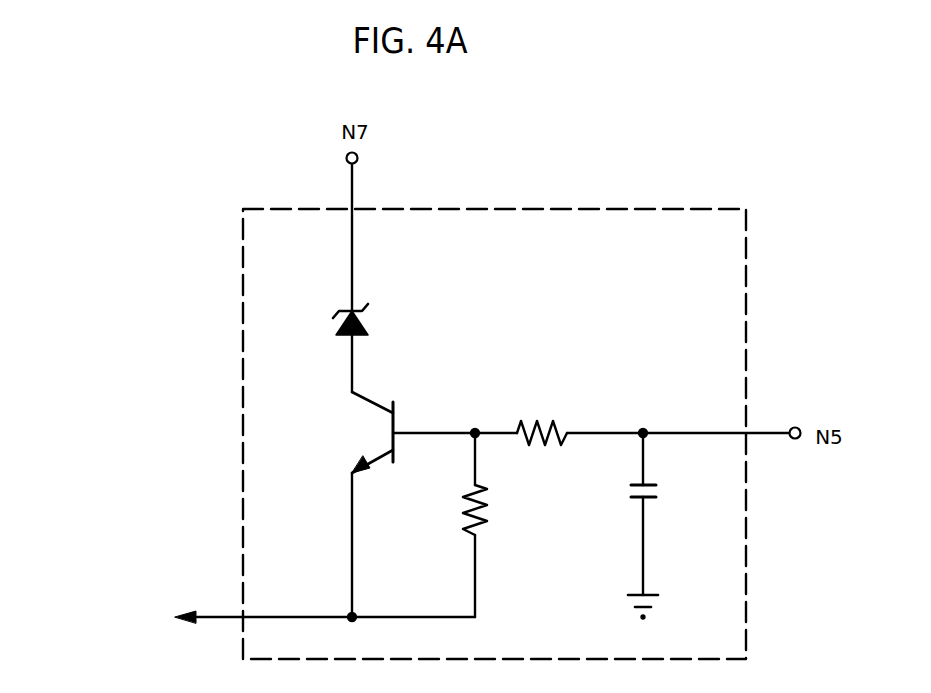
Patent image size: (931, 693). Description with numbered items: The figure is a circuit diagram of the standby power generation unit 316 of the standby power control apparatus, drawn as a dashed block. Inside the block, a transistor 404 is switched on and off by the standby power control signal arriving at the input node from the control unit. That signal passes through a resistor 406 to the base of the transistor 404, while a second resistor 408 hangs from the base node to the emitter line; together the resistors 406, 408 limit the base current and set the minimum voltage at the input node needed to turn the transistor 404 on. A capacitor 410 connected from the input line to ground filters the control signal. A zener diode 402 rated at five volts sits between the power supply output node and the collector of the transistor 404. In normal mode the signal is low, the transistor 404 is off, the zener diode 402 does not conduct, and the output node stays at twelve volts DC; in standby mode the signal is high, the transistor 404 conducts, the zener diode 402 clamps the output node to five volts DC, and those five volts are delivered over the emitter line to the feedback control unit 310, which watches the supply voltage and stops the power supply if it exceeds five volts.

The standby power generation unit 316 is at (746, 346).
The zener diode 402 is at (362, 348).
The transistor 404 is at (391, 504).
The resistor 406 is at (632, 415).
The resistor 408 is at (501, 525).
The capacitor 410 is at (667, 526).
The feedback control unit 310 is at (244, 620).